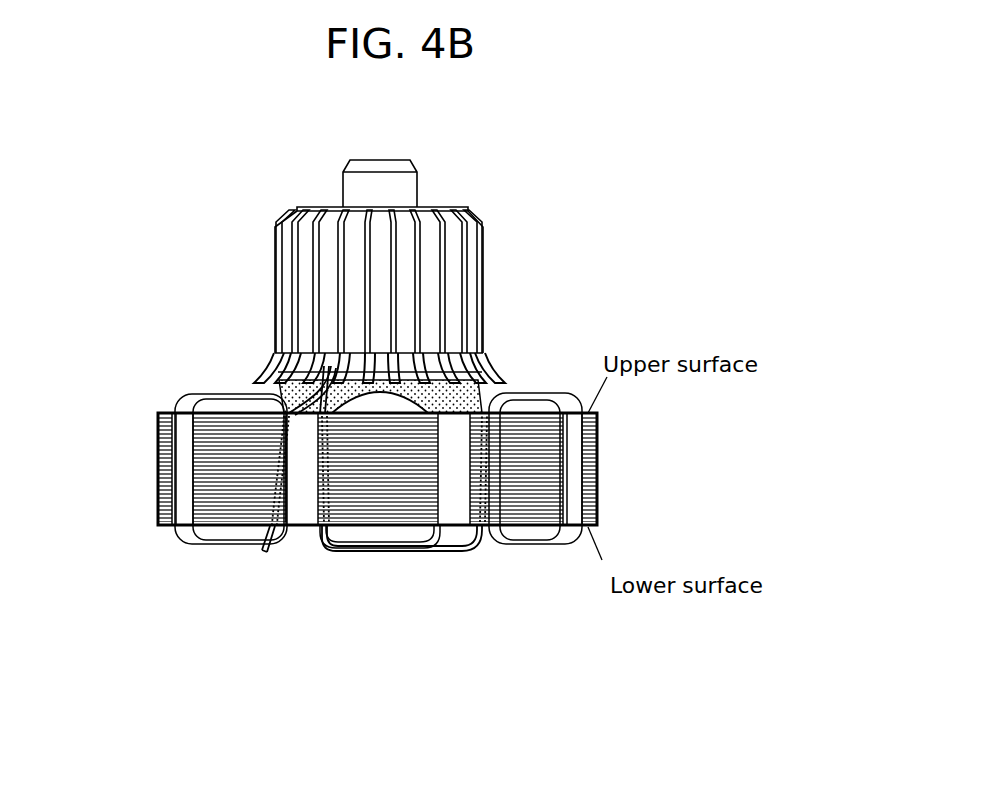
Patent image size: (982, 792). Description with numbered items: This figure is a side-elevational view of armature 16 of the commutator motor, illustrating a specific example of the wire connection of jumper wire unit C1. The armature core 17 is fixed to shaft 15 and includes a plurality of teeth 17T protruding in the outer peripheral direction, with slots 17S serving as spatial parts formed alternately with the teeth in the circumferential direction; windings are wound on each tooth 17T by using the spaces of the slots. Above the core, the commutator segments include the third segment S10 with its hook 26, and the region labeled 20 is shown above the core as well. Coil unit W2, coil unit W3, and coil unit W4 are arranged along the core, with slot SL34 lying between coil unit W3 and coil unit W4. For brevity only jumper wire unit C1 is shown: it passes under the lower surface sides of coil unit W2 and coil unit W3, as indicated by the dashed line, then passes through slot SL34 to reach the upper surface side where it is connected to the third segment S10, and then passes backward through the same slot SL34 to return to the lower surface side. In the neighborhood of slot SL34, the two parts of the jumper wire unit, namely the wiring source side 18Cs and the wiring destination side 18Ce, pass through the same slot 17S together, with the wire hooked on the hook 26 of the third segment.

The armature 16 is at (528, 253).
The shaft 15 is at (418, 193).
The motor body / heat sink 20 is at (275, 228).
The third segment S10 is at (328, 338).
The hook 26 is at (298, 353).
The armature core 17 is at (155, 500).
The slot 17S is at (298, 505).
The tooth 17T is at (343, 508).
The slot SL34 is at (305, 513).
The coil unit W4 is at (242, 533).
The coil unit W3 is at (423, 547).
The coil unit W2 is at (532, 532).
The jumper wire unit C1 is at (335, 547).
The wiring destination side 18Ce is at (283, 388).
The wiring source side 18Cs is at (322, 382).